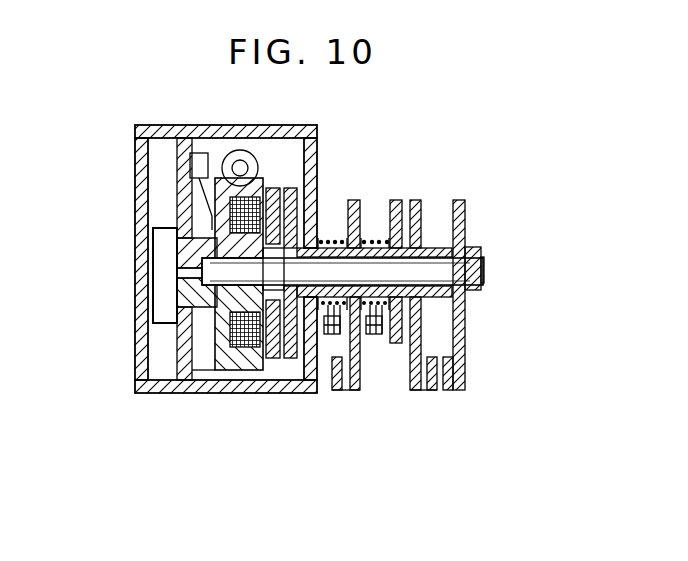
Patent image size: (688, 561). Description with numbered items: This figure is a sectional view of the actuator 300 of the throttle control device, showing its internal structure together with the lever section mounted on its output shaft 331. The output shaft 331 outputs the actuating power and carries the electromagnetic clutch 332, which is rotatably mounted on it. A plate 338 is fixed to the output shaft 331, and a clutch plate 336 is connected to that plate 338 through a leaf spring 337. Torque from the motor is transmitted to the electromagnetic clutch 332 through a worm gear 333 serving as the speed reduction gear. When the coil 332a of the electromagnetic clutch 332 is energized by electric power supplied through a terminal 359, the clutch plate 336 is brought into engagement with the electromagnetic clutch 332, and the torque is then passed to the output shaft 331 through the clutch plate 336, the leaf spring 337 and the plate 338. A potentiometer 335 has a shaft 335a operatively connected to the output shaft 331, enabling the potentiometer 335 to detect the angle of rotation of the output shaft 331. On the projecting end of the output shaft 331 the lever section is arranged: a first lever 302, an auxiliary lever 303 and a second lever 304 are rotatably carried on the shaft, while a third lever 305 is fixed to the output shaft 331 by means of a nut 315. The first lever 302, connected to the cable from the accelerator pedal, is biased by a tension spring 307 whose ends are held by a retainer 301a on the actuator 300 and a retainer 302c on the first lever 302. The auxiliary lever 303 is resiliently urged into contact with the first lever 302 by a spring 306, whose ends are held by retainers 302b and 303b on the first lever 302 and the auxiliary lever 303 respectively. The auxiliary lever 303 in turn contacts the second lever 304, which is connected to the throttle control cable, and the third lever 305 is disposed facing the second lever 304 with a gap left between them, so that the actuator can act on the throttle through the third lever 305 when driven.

The actuator 300 is at (176, 125).
The retainer 301a is at (331, 330).
The first lever 302 is at (371, 241).
The retainer 302b is at (370, 342).
The retainer 302c is at (352, 356).
The auxiliary lever 303 is at (452, 264).
The retainer 303b is at (385, 345).
The second lever 304 is at (423, 210).
The third lever 305 is at (466, 207).
The spring 306 is at (373, 222).
The tension spring 307 is at (337, 222).
The nut 315 is at (471, 249).
The output shaft 331 is at (484, 268).
The electromagnetic clutch 332 is at (222, 347).
The coil 332a is at (233, 327).
The worm gear 333 is at (250, 156).
The potentiometer 335 is at (157, 292).
The shaft 335a is at (180, 262).
The clutch plate 336 is at (272, 362).
The leaf spring 337 is at (225, 381).
The plate 338 is at (291, 360).
The terminal 359 is at (197, 153).